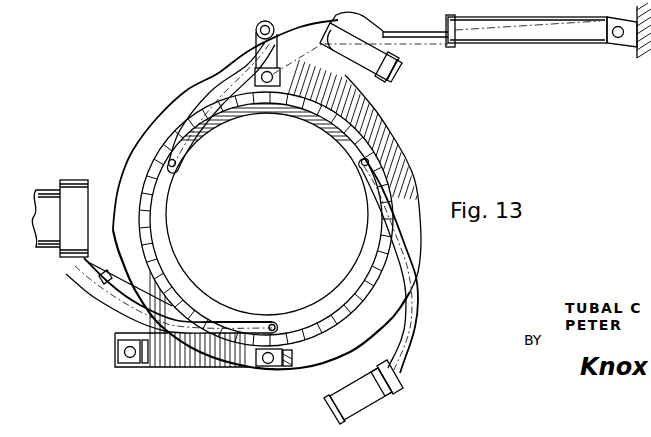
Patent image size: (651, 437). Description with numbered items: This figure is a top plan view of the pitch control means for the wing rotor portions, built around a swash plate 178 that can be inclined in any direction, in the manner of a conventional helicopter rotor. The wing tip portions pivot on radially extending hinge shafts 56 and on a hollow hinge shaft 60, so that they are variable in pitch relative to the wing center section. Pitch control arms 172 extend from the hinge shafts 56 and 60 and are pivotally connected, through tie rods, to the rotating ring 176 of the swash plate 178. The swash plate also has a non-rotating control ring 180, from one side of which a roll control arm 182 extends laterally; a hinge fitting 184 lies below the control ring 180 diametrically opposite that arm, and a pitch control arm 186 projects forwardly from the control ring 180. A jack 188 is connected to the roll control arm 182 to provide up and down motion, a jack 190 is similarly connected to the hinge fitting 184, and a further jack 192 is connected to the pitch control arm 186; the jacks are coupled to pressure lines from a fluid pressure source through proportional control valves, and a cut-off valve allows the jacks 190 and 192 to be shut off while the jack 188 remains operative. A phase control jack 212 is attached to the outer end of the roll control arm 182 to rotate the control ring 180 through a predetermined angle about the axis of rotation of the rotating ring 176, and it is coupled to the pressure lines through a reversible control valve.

The hinge shafts 56 is at (404, 60).
The hollow hinge shaft 60 is at (62, 188).
The pitch control arms 172 is at (246, 57).
The rotating ring 176 is at (370, 239).
The swash plate 178 is at (413, 163).
The non-rotating control ring 180 is at (155, 124).
The roll control arm 182 is at (258, 25).
The hinge fitting 184 is at (288, 364).
The pitch control arm 186 is at (126, 369).
The jack 188 is at (280, 70).
The jack 190 is at (262, 367).
The jack 192 is at (117, 357).
The phase control jack 212 is at (559, 33).